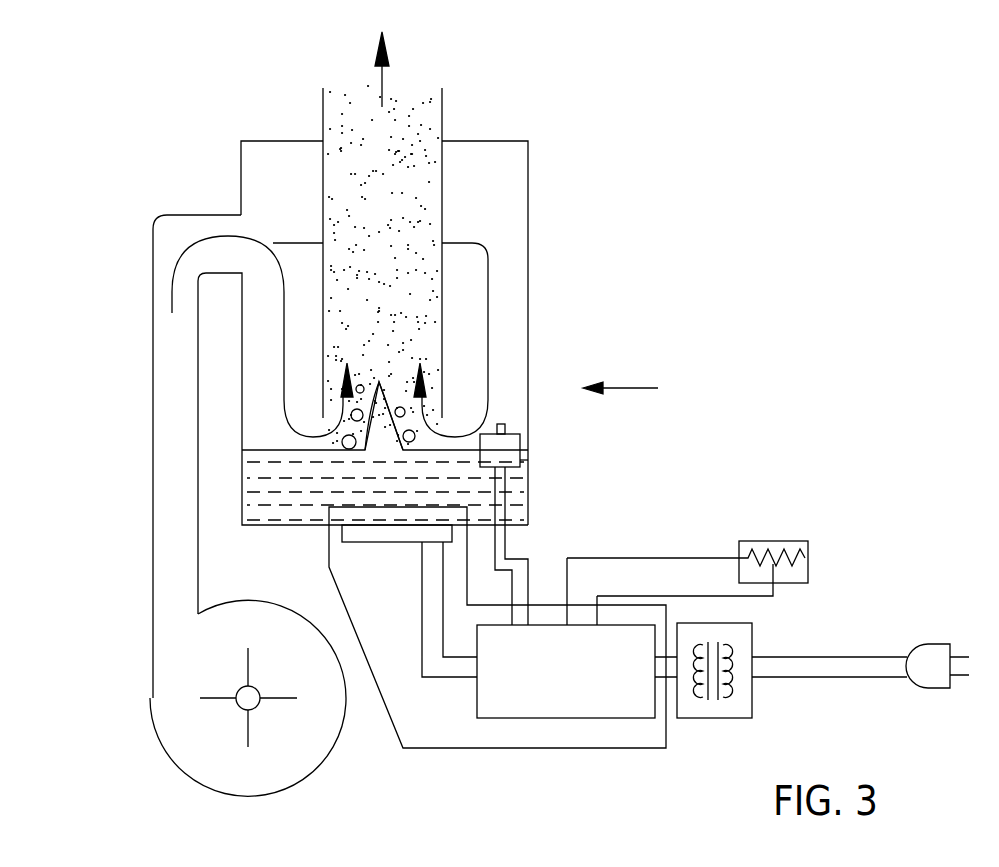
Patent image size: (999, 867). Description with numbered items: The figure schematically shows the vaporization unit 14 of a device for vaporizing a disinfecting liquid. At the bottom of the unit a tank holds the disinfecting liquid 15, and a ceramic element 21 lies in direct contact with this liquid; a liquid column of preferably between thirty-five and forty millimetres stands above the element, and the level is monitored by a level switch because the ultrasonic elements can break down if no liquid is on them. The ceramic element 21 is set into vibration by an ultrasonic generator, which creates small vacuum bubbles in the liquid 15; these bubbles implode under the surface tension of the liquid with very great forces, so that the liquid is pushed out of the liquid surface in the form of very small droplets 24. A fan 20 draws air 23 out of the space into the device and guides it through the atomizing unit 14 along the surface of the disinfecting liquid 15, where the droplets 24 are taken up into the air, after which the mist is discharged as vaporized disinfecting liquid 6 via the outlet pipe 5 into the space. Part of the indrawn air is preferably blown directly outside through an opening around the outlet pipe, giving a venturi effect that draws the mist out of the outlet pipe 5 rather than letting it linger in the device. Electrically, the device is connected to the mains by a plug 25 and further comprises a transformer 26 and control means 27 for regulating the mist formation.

The outlet pipe 5 is at (442, 108).
The vaporized disinfecting liquid 6 is at (362, 125).
The vaporization unit 14 is at (635, 389).
The disinfecting liquid 15 is at (518, 499).
The fan 20 is at (197, 720).
The ceramic element 21 is at (370, 535).
The air 23 is at (198, 240).
The droplets 24 is at (360, 384).
The plug 25 is at (935, 650).
The transformer 26 is at (726, 705).
The control means 27 is at (783, 545).